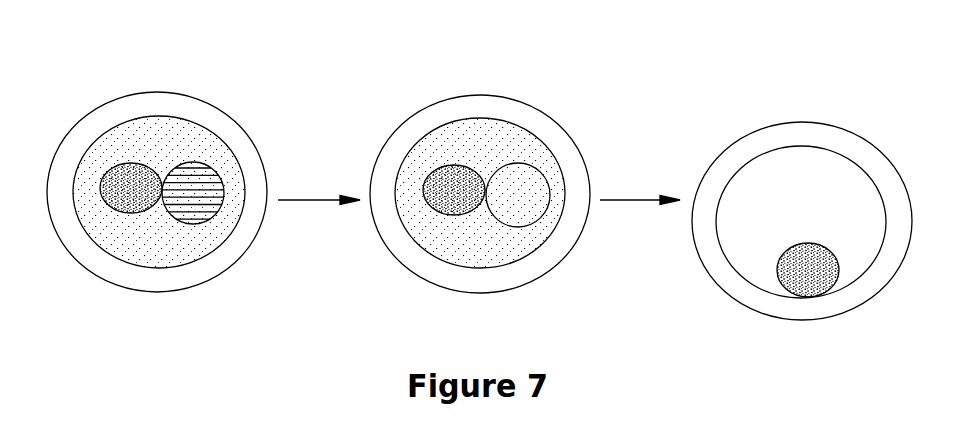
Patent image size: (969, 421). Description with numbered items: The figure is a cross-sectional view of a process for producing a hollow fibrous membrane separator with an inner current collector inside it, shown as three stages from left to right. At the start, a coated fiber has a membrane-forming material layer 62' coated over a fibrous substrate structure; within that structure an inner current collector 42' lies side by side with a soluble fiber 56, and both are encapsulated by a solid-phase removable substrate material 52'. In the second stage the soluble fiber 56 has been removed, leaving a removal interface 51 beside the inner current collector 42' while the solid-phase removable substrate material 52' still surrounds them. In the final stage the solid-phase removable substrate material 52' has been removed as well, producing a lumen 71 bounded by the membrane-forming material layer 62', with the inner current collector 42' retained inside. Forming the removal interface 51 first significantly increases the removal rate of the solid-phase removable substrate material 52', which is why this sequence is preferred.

The membrane-forming material layer 62' is at (479, 179).
The solid-phase removable substrate material 52' is at (331, 167).
The inner current collector 42' is at (427, 240).
The soluble fiber 56 is at (210, 200).
The removal interface 51 is at (508, 205).
The lumen 71 is at (785, 213).